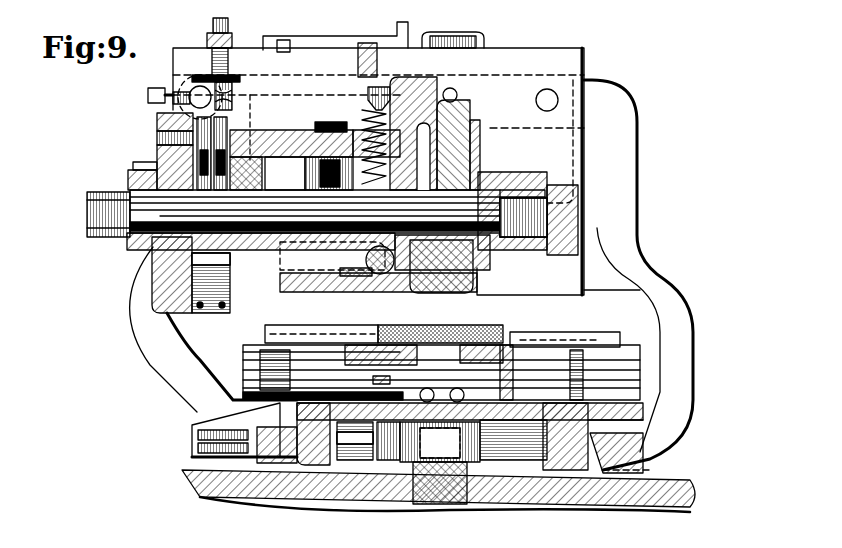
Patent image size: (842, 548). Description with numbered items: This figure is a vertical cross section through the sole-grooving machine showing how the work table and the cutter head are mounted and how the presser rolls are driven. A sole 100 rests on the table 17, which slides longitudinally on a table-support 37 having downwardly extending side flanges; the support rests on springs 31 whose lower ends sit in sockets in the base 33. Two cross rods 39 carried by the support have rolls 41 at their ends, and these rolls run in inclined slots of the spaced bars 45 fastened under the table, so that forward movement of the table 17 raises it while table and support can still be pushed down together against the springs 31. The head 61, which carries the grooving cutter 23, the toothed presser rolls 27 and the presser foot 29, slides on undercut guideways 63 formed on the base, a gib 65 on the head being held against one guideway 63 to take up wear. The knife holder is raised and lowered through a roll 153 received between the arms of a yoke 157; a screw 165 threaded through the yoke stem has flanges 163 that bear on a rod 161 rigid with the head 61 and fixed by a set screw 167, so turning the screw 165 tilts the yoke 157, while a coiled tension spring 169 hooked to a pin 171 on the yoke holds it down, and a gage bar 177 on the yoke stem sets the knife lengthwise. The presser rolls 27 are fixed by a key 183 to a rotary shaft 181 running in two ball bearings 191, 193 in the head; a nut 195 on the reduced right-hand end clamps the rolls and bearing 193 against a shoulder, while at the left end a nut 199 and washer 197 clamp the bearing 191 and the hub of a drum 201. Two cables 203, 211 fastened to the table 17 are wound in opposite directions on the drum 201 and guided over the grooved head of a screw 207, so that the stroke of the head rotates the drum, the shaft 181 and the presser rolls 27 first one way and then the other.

The table 17 is at (548, 334).
The grooving cutter 23 is at (400, 284).
The toothed presser rolls 27 is at (420, 168).
The presser foot 29 is at (478, 150).
The springs 31 is at (415, 470).
The base 33 is at (210, 482).
The table-support 37 is at (345, 460).
The cross rods 39 is at (385, 462).
The rolls 41 is at (635, 473).
The spaced bars 45 is at (275, 505).
The head 61 is at (630, 200).
The undercut guideways 63 is at (265, 445).
The gib 65 is at (192, 445).
The sole 100 is at (440, 342).
The roll 153 is at (458, 88).
The yoke 157 is at (272, 40).
The rod 161 is at (196, 86).
The flanges 163 is at (250, 70).
The screw 165 is at (222, 28).
The set screw 167 is at (160, 78).
The coiled tension spring 169 is at (360, 110).
The pin 171 is at (368, 92).
The gage bar 177 is at (408, 30).
The rotary shaft 181 is at (283, 190).
The key 183 is at (515, 192).
The ball bearing 191 is at (262, 150).
The ball bearing 193 is at (355, 280).
The nut 195 is at (578, 188).
The washer 197 is at (133, 172).
The nut 199 is at (108, 194).
The drum 201 is at (160, 150).
The cable 203 is at (157, 112).
The screw 207 is at (240, 128).
The cable 211 is at (218, 310).